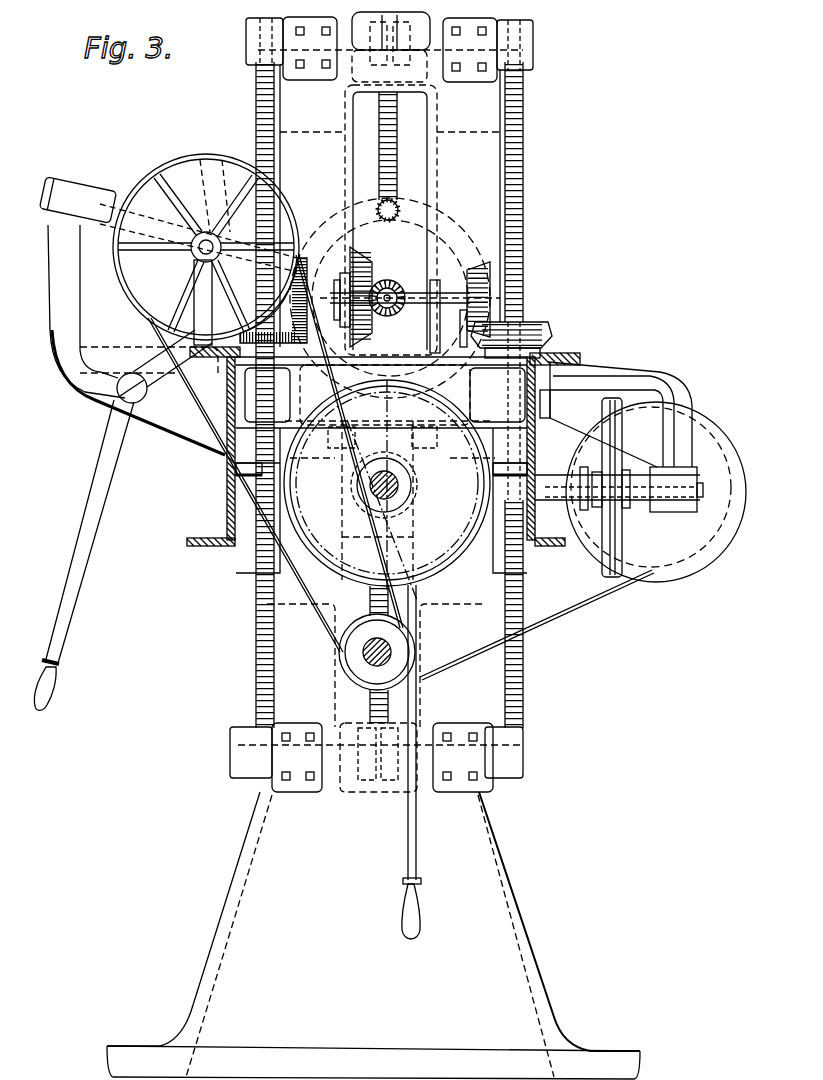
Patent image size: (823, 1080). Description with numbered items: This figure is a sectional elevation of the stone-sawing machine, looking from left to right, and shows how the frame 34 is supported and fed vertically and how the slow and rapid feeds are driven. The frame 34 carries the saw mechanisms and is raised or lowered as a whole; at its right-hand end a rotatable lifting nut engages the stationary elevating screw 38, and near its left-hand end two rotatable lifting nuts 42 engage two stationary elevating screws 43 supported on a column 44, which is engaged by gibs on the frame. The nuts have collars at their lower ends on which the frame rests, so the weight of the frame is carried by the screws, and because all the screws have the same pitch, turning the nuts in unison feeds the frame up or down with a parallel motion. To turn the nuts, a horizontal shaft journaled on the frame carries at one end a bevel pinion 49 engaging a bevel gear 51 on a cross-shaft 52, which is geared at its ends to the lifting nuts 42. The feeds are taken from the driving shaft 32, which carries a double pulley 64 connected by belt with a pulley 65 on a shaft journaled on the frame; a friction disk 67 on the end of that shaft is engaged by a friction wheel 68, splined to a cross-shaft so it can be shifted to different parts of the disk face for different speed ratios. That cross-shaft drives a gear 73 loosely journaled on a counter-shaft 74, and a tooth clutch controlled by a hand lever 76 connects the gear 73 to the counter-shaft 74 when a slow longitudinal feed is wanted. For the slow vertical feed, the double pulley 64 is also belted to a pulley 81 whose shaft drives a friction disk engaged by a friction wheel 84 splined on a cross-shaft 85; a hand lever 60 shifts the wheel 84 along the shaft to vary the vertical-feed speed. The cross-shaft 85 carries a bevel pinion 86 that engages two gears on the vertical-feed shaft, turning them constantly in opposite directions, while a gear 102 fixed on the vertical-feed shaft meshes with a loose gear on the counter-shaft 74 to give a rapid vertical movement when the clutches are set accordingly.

The driving shaft 32 is at (362, 652).
The frame 34 is at (230, 482).
The stationary elevating screw 38 is at (398, 120).
The rotatable lifting nuts 42 is at (263, 440).
The stationary elevating screws 43 is at (256, 100).
The column 44 is at (477, 210).
The bevel pinion 49 is at (385, 278).
The bevel gear 51 is at (360, 265).
The cross-shaft 52 is at (403, 316).
The hand lever 60 is at (82, 565).
The double pulley 64 is at (545, 629).
The pulley 65 is at (586, 552).
The friction disk 67 is at (713, 418).
The friction wheel 68 is at (622, 400).
The gear 73 is at (389, 490).
The counter-shaft 74 is at (372, 483).
The hand lever 76 is at (408, 845).
The pulley 81 is at (138, 294).
The friction wheel 84 is at (222, 155).
The cross-shaft 85 is at (120, 204).
The bevel pinion 86 is at (330, 225).
The gear 102 is at (405, 200).